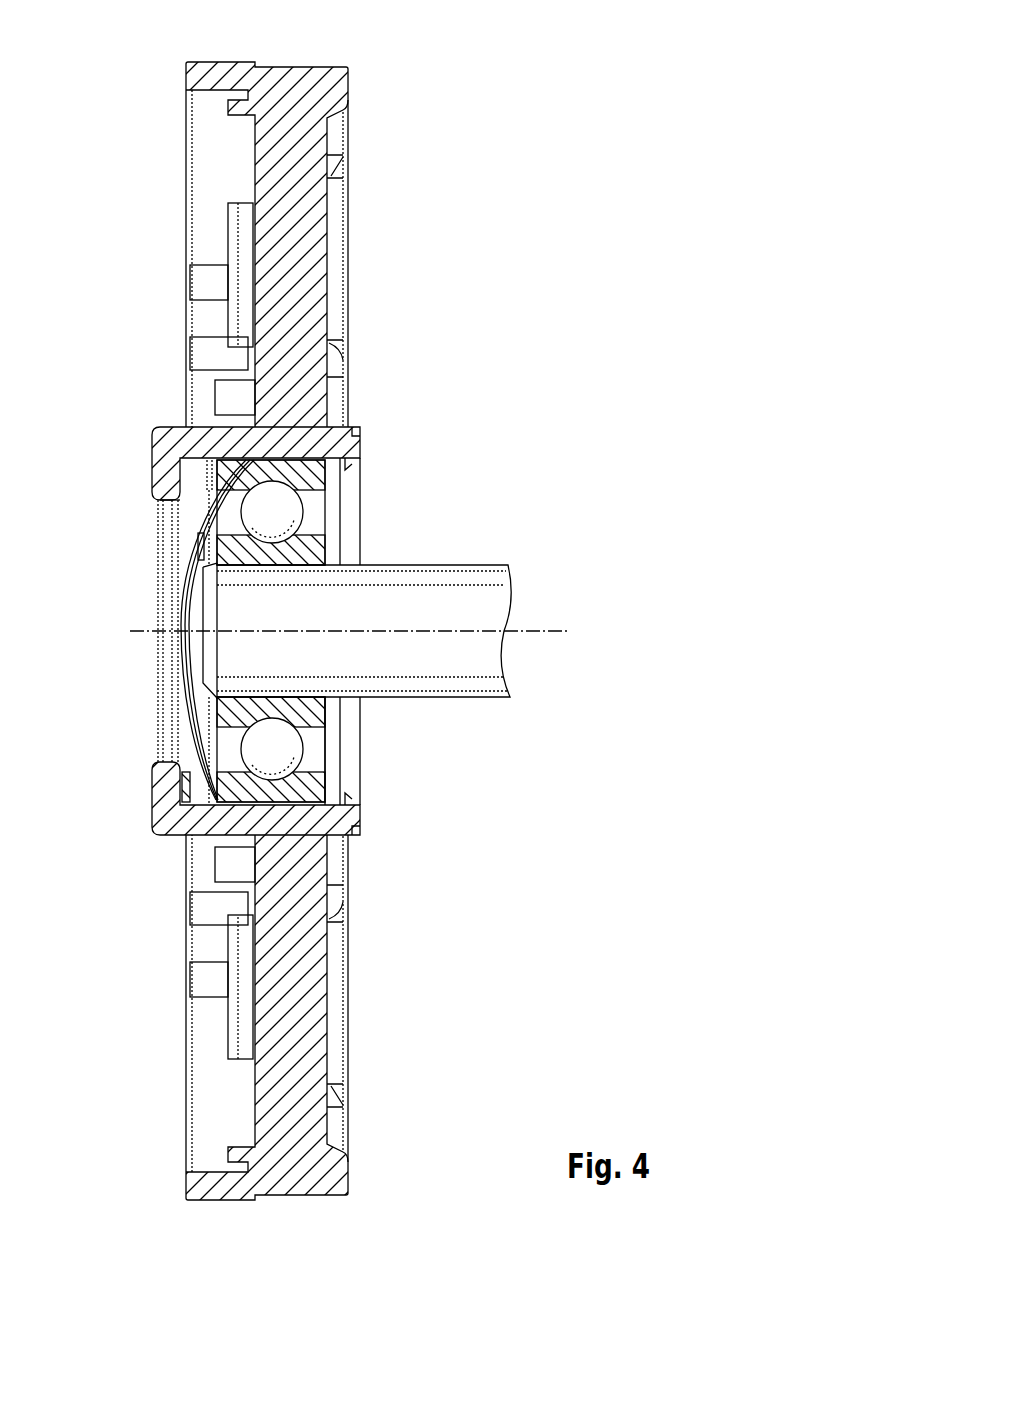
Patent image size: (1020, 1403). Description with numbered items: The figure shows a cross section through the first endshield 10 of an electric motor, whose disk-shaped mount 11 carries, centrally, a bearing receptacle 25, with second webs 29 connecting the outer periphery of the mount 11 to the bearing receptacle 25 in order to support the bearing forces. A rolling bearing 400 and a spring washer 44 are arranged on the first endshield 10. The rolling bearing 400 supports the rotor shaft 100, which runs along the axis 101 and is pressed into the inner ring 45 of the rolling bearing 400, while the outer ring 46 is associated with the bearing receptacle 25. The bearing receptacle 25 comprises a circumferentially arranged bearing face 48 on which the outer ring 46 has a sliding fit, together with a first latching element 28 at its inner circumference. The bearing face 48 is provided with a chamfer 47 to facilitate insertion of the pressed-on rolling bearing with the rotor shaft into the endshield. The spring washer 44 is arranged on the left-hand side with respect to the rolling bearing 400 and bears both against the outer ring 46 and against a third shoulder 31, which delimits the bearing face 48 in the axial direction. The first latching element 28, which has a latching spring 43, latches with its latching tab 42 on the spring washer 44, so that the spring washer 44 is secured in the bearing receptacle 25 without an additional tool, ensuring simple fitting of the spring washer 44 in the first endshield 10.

The first endshield 10 is at (511, 234).
The mount 11 is at (162, 437).
The bearing receptacle 25 is at (388, 743).
The first latching element 28 is at (193, 535).
The second webs 29 is at (335, 360).
The third shoulder 31 is at (165, 492).
The latching tab 42 is at (196, 546).
The latching spring 43 is at (200, 572).
The spring washer 44 is at (188, 620).
The inner ring 45 is at (332, 706).
The outer ring 46 is at (360, 766).
The chamfer 47 is at (360, 462).
The bearing face 48 is at (362, 431).
The rotor shaft 100 is at (473, 579).
The axis of rotation 101 is at (565, 625).
The rolling bearing 400 is at (350, 507).